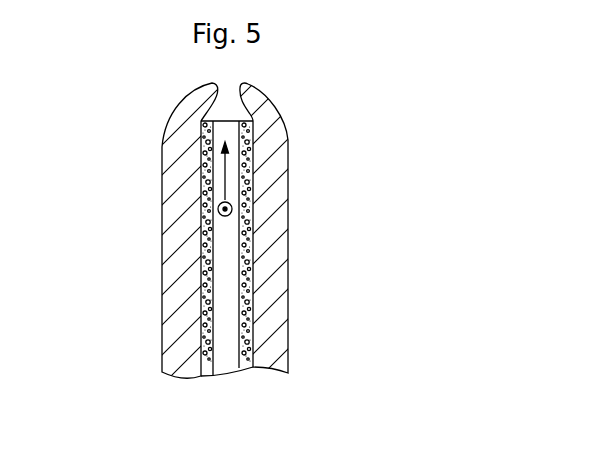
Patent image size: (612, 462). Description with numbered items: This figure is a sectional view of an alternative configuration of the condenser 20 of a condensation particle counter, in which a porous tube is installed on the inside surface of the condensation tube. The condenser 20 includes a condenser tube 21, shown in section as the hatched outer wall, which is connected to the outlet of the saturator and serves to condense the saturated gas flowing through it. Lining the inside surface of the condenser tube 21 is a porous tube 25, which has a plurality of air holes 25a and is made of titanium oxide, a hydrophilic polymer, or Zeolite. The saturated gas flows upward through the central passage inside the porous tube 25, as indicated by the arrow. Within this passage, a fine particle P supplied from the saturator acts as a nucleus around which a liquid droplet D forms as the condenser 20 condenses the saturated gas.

The condenser 20 is at (293, 230).
The condenser tube 21 is at (181, 211).
The porous tube 25 is at (207, 305).
The air hole 25a is at (250, 247).
The liquid droplet D is at (229, 190).
The fine particle P is at (232, 207).